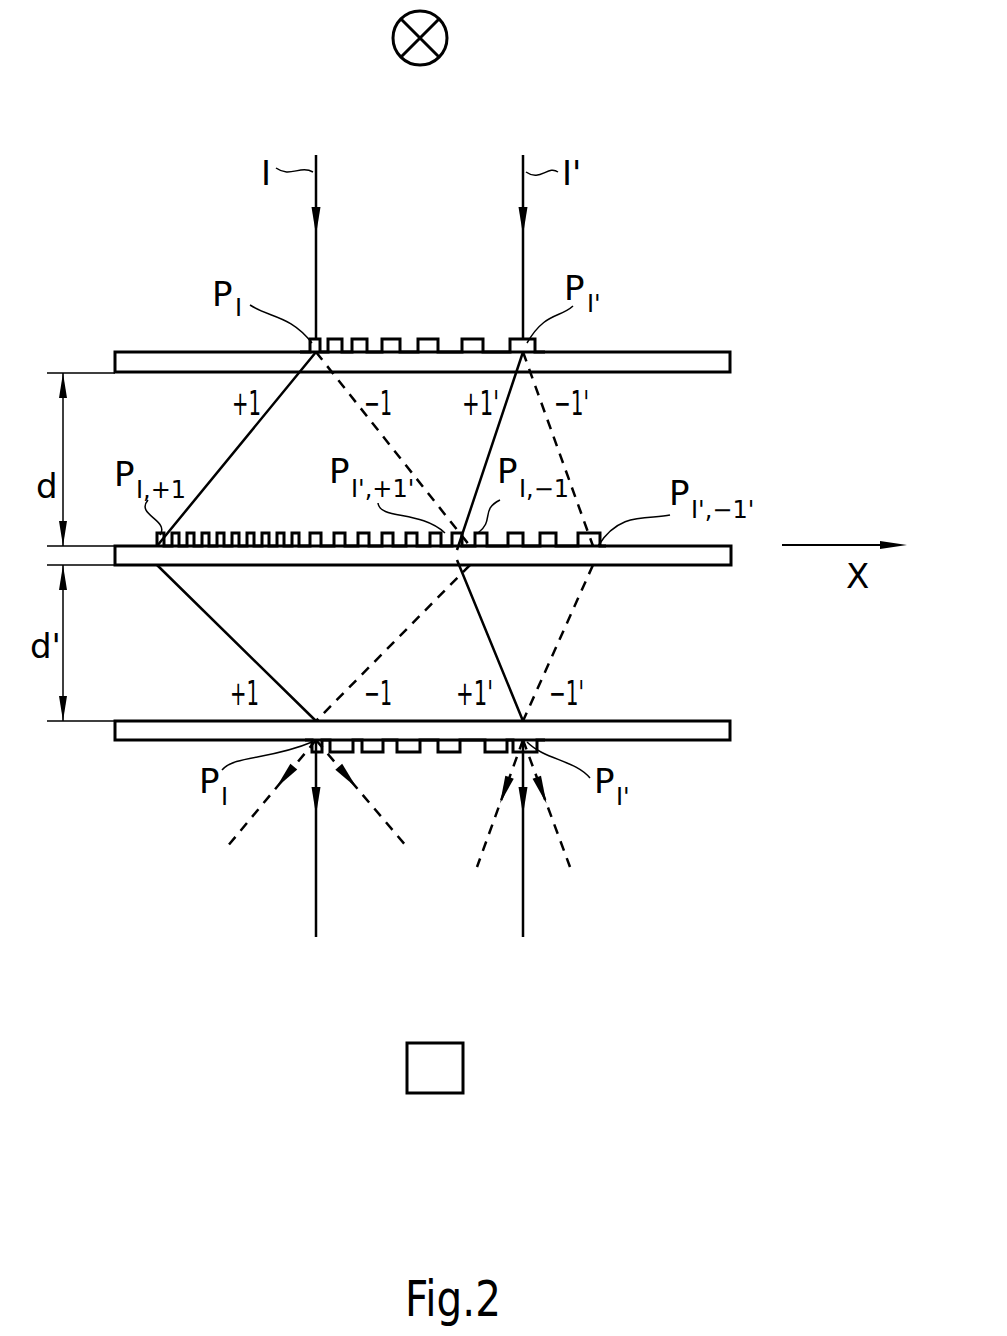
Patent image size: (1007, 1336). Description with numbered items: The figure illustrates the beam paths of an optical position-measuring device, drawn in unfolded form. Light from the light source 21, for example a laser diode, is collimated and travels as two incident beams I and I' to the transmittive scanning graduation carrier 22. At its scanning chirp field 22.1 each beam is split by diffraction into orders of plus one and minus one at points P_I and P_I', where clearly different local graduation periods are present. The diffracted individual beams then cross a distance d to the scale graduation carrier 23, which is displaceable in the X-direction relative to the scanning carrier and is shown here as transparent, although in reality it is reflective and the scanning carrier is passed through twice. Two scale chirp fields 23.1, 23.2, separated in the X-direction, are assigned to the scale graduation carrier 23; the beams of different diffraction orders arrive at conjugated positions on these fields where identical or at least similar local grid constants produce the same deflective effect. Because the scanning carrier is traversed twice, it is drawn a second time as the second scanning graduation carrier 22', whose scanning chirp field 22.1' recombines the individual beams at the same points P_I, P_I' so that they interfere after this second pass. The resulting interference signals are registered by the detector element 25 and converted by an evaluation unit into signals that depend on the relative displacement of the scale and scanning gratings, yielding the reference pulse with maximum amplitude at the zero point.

The light source 21 is at (396, 30).
The scanning graduation carrier 22 is at (422, 321).
The scanning chirp field 22.1 is at (422, 297).
The scale graduation carrier 23 is at (713, 565).
The first scale chirp field 23.1 is at (300, 533).
The second scale chirp field 23.2 is at (578, 533).
The second scanning graduation carrier 22' is at (439, 759).
The scanning chirp field of second scanning graduation carrier 22.1' is at (425, 782).
The detector element 25 is at (463, 1068).